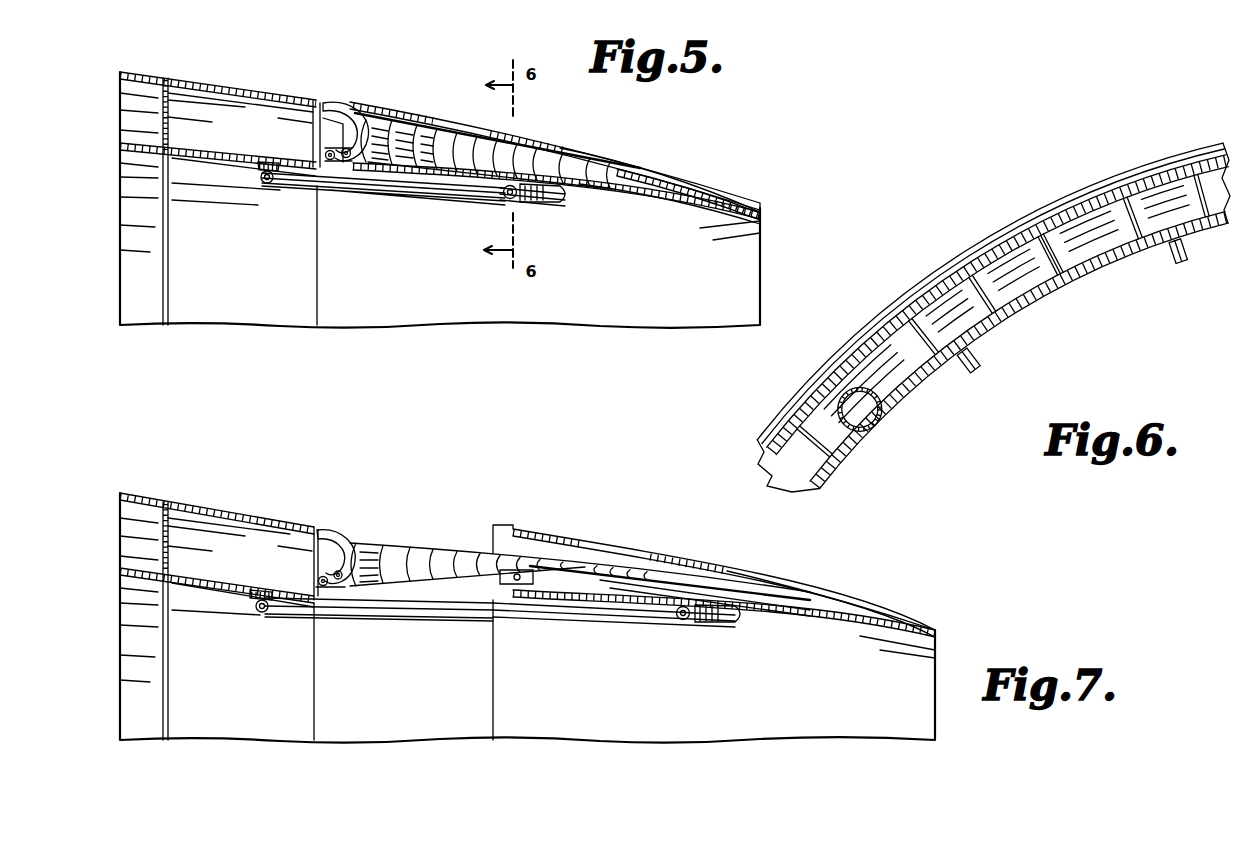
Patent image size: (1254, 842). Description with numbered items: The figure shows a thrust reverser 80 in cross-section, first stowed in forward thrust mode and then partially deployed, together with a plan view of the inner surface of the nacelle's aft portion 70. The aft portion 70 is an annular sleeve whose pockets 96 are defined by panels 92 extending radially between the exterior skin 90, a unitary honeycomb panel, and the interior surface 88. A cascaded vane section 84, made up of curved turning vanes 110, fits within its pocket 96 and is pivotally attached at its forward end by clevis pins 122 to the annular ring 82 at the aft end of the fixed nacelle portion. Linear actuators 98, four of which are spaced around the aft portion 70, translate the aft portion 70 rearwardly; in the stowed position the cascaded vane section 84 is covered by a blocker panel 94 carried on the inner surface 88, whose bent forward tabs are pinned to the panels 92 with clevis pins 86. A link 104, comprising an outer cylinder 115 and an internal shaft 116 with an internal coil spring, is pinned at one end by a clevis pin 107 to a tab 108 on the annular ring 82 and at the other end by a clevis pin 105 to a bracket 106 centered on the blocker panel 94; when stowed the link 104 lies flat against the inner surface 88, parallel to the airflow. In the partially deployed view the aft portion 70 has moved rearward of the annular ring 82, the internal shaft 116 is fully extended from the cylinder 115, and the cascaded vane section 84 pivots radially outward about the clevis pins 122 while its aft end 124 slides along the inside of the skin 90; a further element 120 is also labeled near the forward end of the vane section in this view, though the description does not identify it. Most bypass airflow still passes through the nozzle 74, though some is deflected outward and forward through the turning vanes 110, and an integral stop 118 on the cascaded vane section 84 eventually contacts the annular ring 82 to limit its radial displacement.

In FIG. 5, the aft portion 70 is at (407, 112).
In FIG. 5, the nozzle 74 is at (667, 291).
In FIG. 7, the nozzle 74 is at (794, 701).
In FIG. 5, the thrust reverser 80 is at (728, 172).
In FIG. 7, the thrust reverser 80 is at (584, 525).
In FIG. 5, the annular ring 82 is at (226, 88).
In FIG. 7, the annular ring 82 is at (228, 508).
In FIG. 5, the cascaded vane section 84 is at (462, 128).
In FIG. 7, the cascaded vane section 84 is at (455, 548).
In FIG. 5, the clevis pin 86 is at (323, 118).
In FIG. 6, the clevis pin 86 is at (943, 280).
In FIG. 7, the clevis pin 86 is at (512, 578).
In FIG. 5, the interior surface 88 is at (693, 199).
In FIG. 5, the exterior skin 90 is at (562, 137).
In FIG. 6, the exterior skin 90 is at (1080, 193).
In FIG. 7, the exterior skin 90 is at (808, 590).
In FIG. 7, the panel 92 is at (720, 580).
In FIG. 5, the blocker panel 94 is at (642, 192).
In FIG. 6, the blocker panel 94 is at (1100, 276).
In FIG. 7, the blocker panel 94 is at (803, 610).
In FIG. 5, the pocket 96 is at (366, 110).
In FIG. 7, the pocket 96 is at (520, 529).
In FIG. 6, the linear actuator 98 is at (876, 430).
In FIG. 5, the link 104 is at (410, 198).
In FIG. 7, the link 104 is at (405, 608).
In FIG. 5, the clevis pin 105 is at (516, 199).
In FIG. 6, the clevis pin 105 is at (1190, 262).
In FIG. 7, the clevis pin 105 is at (683, 621).
In FIG. 5, the bracket 106 is at (563, 198).
In FIG. 7, the bracket 106 is at (735, 619).
In FIG. 5, the clevis pin 107 is at (265, 185).
In FIG. 7, the clevis pin 107 is at (262, 622).
In FIG. 5, the tab 108 is at (257, 168).
In FIG. 7, the tab 108 is at (248, 600).
In FIG. 5, the turning vane 110 is at (440, 110).
In FIG. 6, the turning vane 110 is at (1030, 222).
In FIG. 7, the turning vane 110 is at (418, 533).
In FIG. 5, the outer cylinder 115 is at (323, 193).
In FIG. 7, the outer cylinder 115 is at (478, 618).
In FIG. 5, the internal shaft 116 is at (497, 201).
In FIG. 7, the internal shaft 116 is at (605, 621).
In FIG. 5, the integral stop 118 is at (340, 100).
In FIG. 7, the integral stop 118 is at (330, 526).
In FIG. 7, the seal end 120 is at (375, 540).
In FIG. 5, the clevis pin 122 is at (323, 149).
In FIG. 7, the clevis pin 122 is at (343, 590).
In FIG. 7, the aft end 124 is at (680, 553).